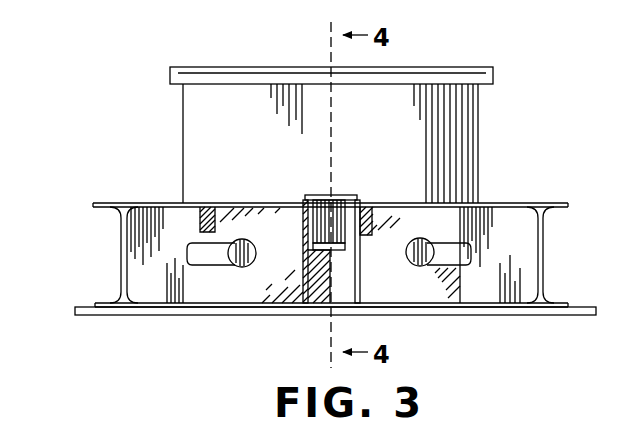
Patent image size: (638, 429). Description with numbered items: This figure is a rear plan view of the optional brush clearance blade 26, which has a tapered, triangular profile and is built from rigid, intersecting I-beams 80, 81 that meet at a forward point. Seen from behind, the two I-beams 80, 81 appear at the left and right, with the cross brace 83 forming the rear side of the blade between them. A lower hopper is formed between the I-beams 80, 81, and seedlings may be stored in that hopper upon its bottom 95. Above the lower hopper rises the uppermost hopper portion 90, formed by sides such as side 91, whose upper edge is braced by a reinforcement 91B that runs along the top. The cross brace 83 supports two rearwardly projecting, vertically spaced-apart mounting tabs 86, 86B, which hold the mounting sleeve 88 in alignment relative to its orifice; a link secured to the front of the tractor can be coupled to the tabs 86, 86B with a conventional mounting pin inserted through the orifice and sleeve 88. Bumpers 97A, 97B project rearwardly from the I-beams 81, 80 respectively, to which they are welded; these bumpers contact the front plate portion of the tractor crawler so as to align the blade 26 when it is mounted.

The brush clearance blade 26 is at (145, 160).
The I-beam 80 is at (546, 234).
The I-beam 81 is at (121, 259).
The cross brace 83 is at (278, 226).
The mounting tab 86 is at (352, 193).
The mounting tab 86B is at (318, 270).
The mounting sleeve 88 is at (342, 235).
The uppermost hopper portion 90 is at (480, 140).
The side 91 is at (330, 143).
The reinforcement 91B is at (262, 66).
The bottom 95 is at (265, 290).
The bumper 97A is at (205, 256).
The bumper 97B is at (452, 250).